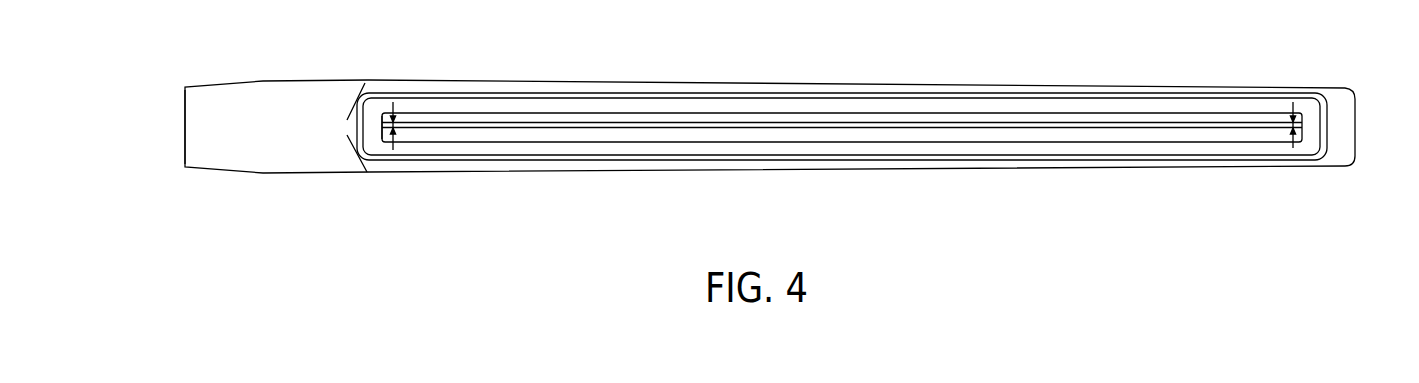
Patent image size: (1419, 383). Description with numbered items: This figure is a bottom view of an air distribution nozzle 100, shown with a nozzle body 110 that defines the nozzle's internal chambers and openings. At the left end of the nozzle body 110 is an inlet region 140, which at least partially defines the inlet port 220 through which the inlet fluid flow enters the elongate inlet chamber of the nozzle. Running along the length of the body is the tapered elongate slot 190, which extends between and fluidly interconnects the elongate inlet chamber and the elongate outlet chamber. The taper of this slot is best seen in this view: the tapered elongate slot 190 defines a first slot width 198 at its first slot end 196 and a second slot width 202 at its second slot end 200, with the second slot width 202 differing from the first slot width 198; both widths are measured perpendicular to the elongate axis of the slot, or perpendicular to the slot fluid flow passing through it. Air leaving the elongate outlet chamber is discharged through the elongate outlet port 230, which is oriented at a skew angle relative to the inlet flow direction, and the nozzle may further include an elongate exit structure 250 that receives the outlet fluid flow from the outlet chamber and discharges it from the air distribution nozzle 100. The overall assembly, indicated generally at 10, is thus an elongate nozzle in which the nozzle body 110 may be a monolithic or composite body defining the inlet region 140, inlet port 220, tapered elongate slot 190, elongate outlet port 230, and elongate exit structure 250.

The electronic device 10 is at (274, 264).
The air distribution nozzle 100 is at (316, 32).
The nozzle body 110 is at (306, 76).
The inlet region 140 is at (208, 153).
The tapered elongate slot 190 is at (442, 134).
The first slot end 196 is at (380, 126).
The first slot width 198 is at (394, 104).
The second slot end 200 is at (1303, 128).
The second slot width 202 is at (1290, 145).
The inlet port 220 is at (176, 143).
The elongate outlet port 230 is at (542, 149).
The elongate exit structure 250 is at (631, 163).